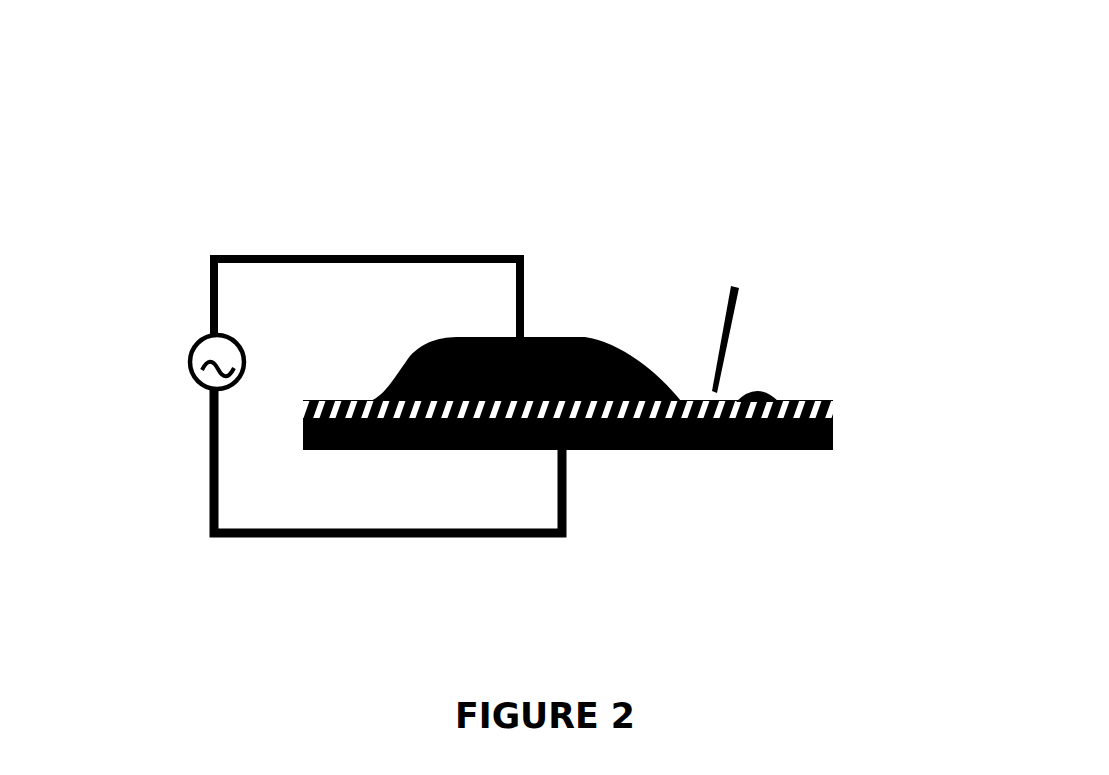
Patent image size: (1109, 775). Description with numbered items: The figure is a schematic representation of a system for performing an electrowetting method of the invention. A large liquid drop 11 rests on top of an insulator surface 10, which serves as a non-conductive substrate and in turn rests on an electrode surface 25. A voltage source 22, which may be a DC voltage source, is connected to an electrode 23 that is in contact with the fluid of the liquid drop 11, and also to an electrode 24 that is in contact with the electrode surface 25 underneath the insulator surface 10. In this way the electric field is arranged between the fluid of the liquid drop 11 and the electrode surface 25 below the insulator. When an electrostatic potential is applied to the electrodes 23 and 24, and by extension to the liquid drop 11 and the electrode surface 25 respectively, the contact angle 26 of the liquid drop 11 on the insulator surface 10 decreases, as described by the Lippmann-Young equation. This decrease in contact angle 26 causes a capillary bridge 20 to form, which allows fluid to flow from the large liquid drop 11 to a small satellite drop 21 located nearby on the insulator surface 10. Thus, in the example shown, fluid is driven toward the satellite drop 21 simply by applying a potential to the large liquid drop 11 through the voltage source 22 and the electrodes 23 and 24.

The insulator surface 10 is at (830, 413).
The liquid drop 11 is at (560, 340).
The capillary bridge 20 is at (739, 317).
The satellite drop 21 is at (763, 386).
The voltage source 22 is at (188, 360).
The electrode 23 is at (305, 256).
The electrode 24 is at (245, 538).
The electrode surface 25 is at (673, 450).
The contact angle 26 is at (673, 384).